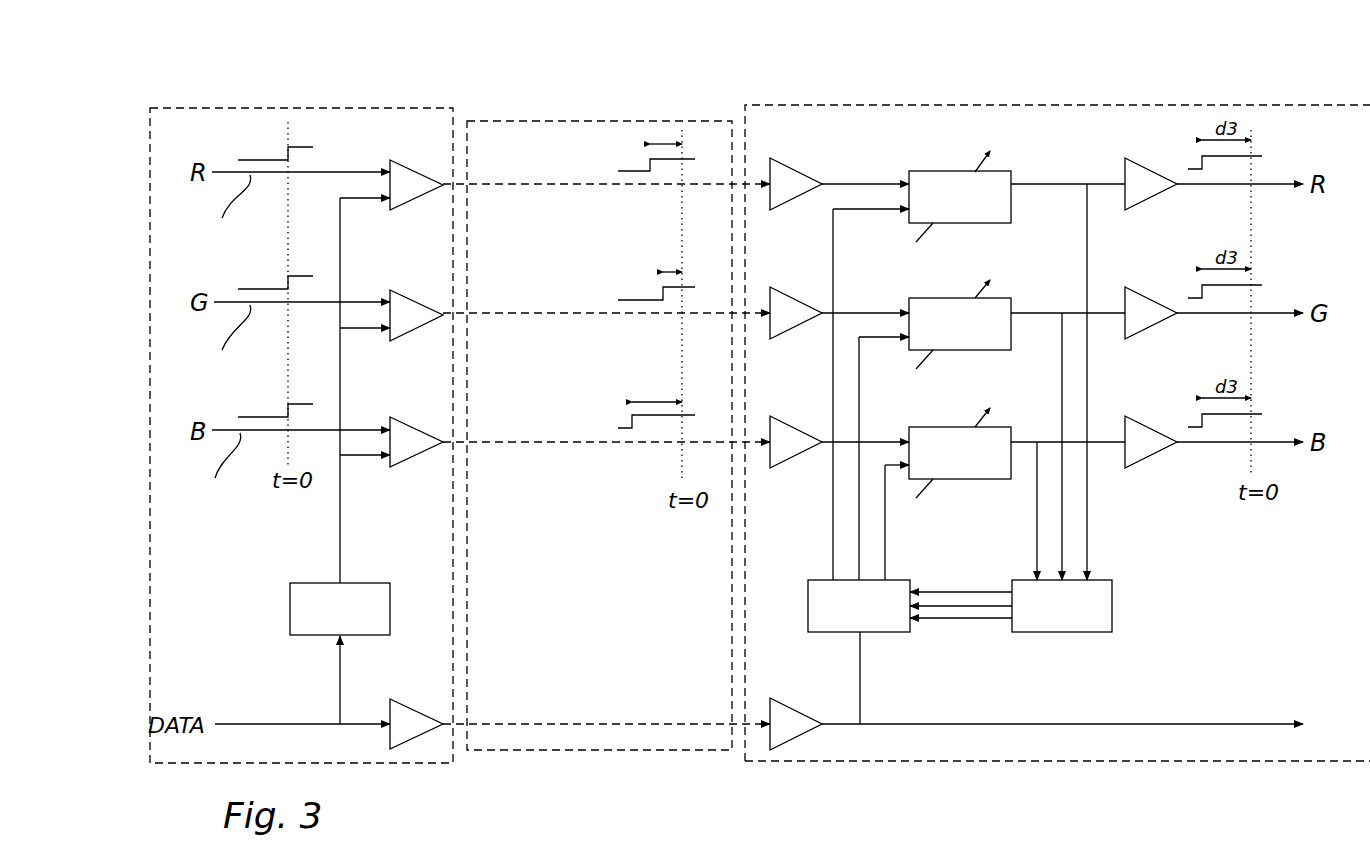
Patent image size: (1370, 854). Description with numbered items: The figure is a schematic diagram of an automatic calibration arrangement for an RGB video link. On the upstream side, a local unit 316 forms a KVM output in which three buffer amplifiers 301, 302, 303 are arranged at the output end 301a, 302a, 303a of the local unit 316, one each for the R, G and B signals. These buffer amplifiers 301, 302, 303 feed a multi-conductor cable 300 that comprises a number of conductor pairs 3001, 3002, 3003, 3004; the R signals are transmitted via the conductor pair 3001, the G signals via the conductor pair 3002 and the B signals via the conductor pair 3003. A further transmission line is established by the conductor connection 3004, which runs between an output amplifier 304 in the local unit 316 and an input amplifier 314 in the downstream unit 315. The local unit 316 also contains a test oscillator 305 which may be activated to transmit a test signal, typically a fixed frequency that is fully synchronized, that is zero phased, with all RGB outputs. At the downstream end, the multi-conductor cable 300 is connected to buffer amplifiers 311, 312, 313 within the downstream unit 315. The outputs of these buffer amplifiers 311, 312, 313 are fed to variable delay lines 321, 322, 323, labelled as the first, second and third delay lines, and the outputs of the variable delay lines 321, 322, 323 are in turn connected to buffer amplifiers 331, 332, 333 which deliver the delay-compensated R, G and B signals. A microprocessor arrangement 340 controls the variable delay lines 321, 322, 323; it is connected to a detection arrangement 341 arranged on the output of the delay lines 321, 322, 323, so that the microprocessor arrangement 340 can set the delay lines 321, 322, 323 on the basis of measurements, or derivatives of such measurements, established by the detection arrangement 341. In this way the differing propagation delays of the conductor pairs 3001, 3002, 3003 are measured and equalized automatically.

The multi-conductor cable 300 is at (535, 121).
The buffer amplifier 301 is at (414, 168).
The output end 301a is at (240, 212).
The buffer amplifier 302 is at (412, 290).
The output end 302a is at (230, 344).
The buffer amplifier 303 is at (410, 417).
The output end 303a is at (230, 468).
The output amplifier 304 is at (410, 700).
The test oscillator 305 is at (290, 590).
The buffer amplifier 311 is at (802, 200).
The buffer amplifier 312 is at (802, 328).
The buffer amplifier 313 is at (800, 457).
The input amplifier 314 is at (802, 702).
The downstream unit 315 is at (868, 105).
The local unit 316 is at (228, 108).
The variable delay line 321 is at (1012, 211).
The variable delay line 322 is at (1012, 340).
The variable delay line 323 is at (1000, 479).
The buffer amplifier 331 is at (1152, 200).
The buffer amplifier 332 is at (1152, 330).
The buffer amplifier 333 is at (1153, 455).
The microprocessor arrangement 340 is at (878, 632).
The detection arrangement 341 is at (1085, 632).
The conductor pair 3001 is at (540, 186).
The conductor pair 3002 is at (547, 318).
The conductor pair 3003 is at (549, 445).
The conductor connection 3004 is at (592, 723).